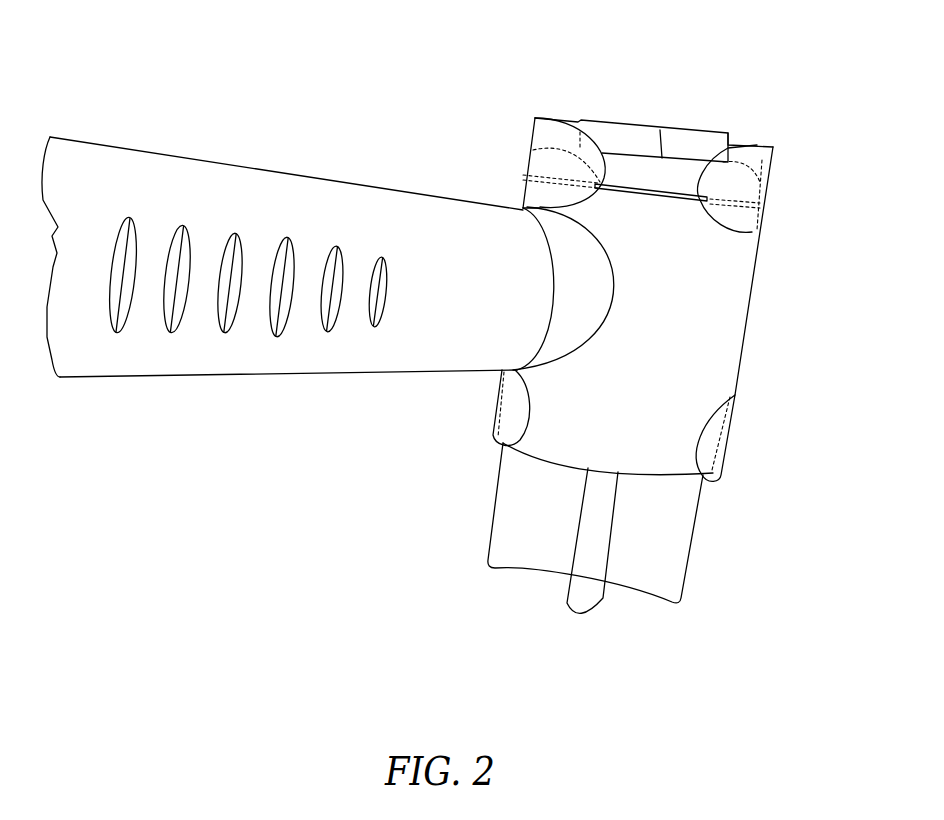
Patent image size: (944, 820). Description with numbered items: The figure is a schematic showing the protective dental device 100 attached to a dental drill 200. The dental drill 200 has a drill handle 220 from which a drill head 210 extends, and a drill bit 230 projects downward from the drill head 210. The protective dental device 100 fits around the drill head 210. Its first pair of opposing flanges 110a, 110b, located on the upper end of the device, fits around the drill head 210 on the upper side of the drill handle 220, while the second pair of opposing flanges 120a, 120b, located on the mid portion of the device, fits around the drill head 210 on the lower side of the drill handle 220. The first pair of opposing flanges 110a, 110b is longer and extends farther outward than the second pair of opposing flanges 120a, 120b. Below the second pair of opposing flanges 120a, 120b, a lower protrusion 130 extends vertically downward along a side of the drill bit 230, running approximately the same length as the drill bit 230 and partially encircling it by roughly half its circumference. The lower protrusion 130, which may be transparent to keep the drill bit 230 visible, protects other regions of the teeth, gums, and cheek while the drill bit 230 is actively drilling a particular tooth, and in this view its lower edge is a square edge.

The dental drill 200 is at (369, 111).
The drill handle 220 is at (220, 206).
The drill head 210 is at (692, 266).
The drill bit 230 is at (583, 598).
The protective dental device 100 is at (733, 138).
The first pair of opposing flanges 110b is at (546, 132).
The first pair of opposing flanges 110a is at (747, 162).
The second pair of opposing flanges 120b is at (520, 417).
The second pair of opposing flanges 120a is at (710, 440).
The lower protrusion 130 is at (660, 563).